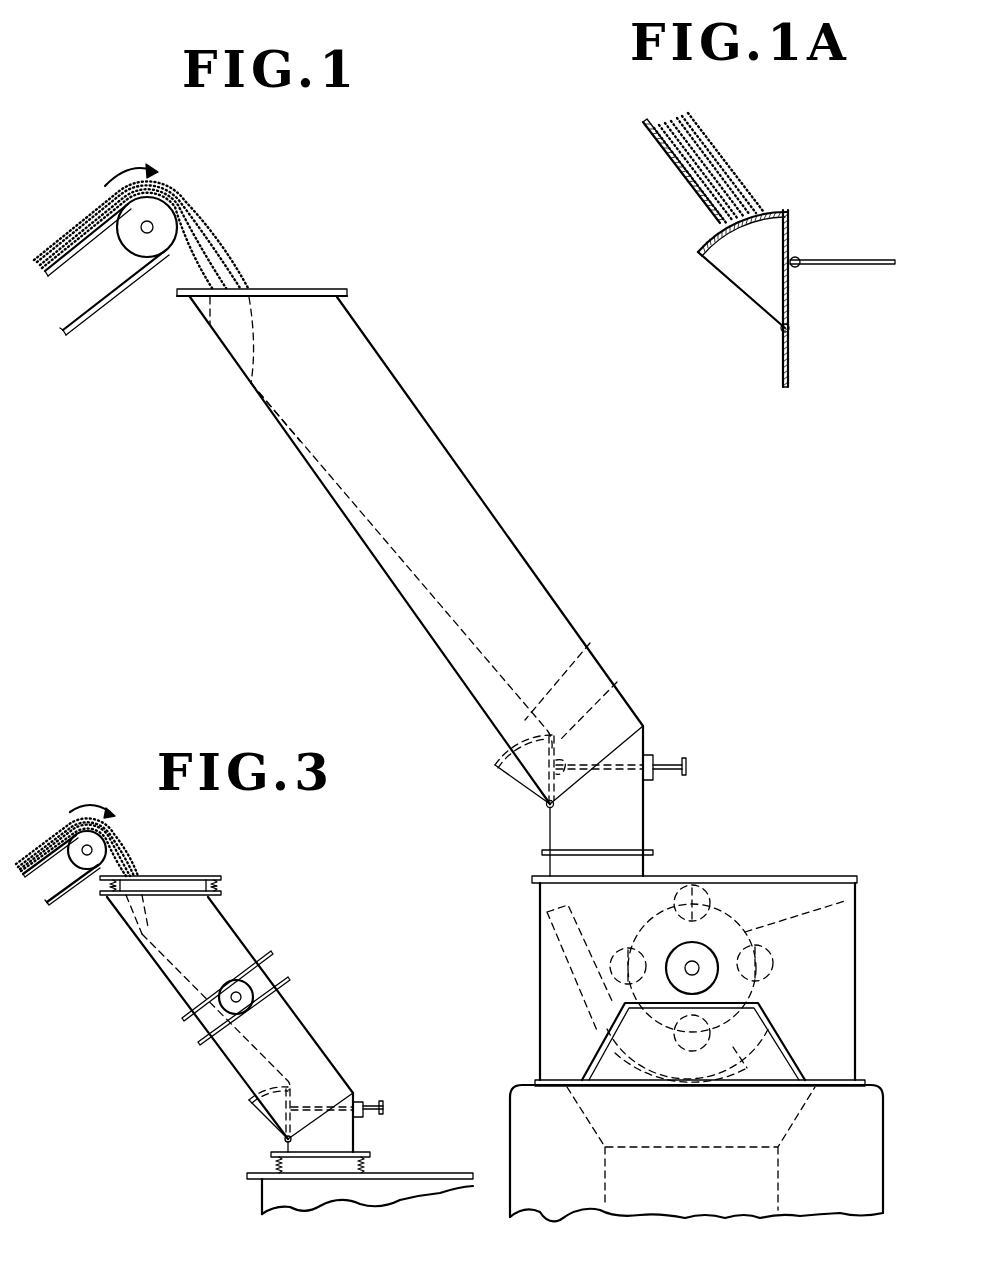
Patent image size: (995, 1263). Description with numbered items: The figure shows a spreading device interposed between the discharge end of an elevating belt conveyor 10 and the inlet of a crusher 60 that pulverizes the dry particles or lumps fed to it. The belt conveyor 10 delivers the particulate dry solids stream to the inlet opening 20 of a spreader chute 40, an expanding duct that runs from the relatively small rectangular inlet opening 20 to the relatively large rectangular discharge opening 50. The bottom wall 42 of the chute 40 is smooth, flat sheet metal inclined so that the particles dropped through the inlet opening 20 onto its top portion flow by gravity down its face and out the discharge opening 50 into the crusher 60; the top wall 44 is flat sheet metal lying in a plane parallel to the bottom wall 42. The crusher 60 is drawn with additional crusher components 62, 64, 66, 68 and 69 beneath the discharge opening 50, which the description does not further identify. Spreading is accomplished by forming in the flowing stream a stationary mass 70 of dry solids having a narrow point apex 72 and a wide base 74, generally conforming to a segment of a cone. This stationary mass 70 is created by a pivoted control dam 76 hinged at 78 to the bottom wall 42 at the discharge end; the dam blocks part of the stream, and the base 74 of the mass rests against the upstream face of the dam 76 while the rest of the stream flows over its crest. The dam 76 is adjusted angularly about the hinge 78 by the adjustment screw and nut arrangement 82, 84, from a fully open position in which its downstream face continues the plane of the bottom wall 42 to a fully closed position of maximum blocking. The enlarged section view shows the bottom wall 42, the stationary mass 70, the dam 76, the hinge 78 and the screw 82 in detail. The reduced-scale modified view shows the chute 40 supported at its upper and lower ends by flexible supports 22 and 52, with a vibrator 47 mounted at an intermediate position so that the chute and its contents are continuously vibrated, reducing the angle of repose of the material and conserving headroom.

In FIG. 1, the belt conveyor 10 is at (70, 216).
In FIG. 1, the inlet opening 20 is at (290, 287).
In FIG. 3, the flexible support 22 is at (223, 884).
In FIG. 1, the spreader chute 40 is at (416, 586).
In FIG. 1, the bottom wall 42 is at (372, 566).
In FIG. 1A, the bottom wall 42 is at (688, 187).
In FIG. 1, the top wall 44 is at (515, 540).
In FIG. 3, the vibrator 47 is at (243, 999).
In FIG. 1, the discharge opening 50 is at (625, 850).
In FIG. 3, the flexible support 52 is at (368, 1162).
In FIG. 1, the crusher 60 is at (856, 955).
In FIG. 1, the baffle plate 62 is at (555, 972).
In FIG. 1, the rotor 64 is at (700, 878).
In FIG. 1, the rotor blade path 66 is at (848, 900).
In FIG. 1, the rotor hub 68 is at (694, 970).
In FIG. 1, the base 69 is at (780, 1175).
In FIG. 1, the stationary mass 70 is at (460, 656).
In FIG. 1A, the stationary mass 70 is at (717, 163).
In FIG. 1, the apex 72 is at (247, 381).
In FIG. 1, the base 74 is at (598, 636).
In FIG. 1, the control dam 76 is at (622, 673).
In FIG. 1A, the control dam 76 is at (790, 232).
In FIG. 1, the hinge 78 is at (547, 806).
In FIG. 1A, the hinge 78 is at (783, 333).
In FIG. 1, the adjustment screw 82 is at (663, 753).
In FIG. 1A, the adjustment screw 82 is at (843, 268).
In FIG. 1, the adjustment nut 84 is at (648, 781).